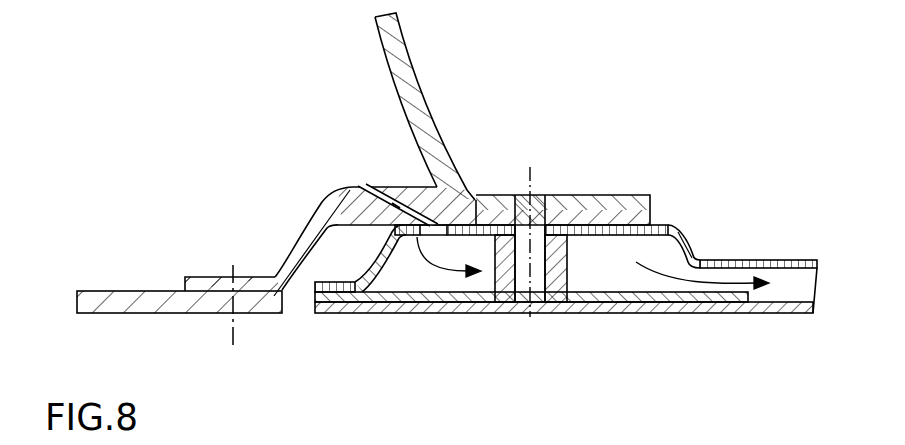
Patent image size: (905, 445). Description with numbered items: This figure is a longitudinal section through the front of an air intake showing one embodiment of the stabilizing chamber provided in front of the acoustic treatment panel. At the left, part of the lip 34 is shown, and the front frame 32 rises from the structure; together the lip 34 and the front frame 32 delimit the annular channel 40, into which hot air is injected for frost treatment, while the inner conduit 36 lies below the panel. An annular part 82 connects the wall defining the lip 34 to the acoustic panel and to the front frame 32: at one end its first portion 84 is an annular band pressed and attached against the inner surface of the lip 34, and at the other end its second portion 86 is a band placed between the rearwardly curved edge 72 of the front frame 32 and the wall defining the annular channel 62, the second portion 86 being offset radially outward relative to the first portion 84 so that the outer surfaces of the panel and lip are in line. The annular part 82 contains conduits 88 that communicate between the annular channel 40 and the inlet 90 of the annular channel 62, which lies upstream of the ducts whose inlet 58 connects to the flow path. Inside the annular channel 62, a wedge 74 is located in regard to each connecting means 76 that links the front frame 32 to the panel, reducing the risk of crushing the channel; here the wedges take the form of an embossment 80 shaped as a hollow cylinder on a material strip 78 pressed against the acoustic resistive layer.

The front frame 32 is at (403, 78).
The lip 34 is at (122, 304).
The inner conduit 36 is at (528, 410).
The annular channel 40 is at (193, 225).
The inlet 58 is at (797, 290).
The annular channel 62 is at (650, 252).
The rearwardly curved edge 72 is at (636, 196).
The wedge 74 is at (494, 280).
The connecting means 76 is at (533, 178).
The material strip 78 is at (706, 301).
The embossment 80 is at (566, 284).
The annular part 82 is at (322, 205).
The first portion 84 is at (194, 284).
The second portion 86 is at (592, 205).
The conduit 88 is at (378, 188).
The inlet 90 is at (413, 232).